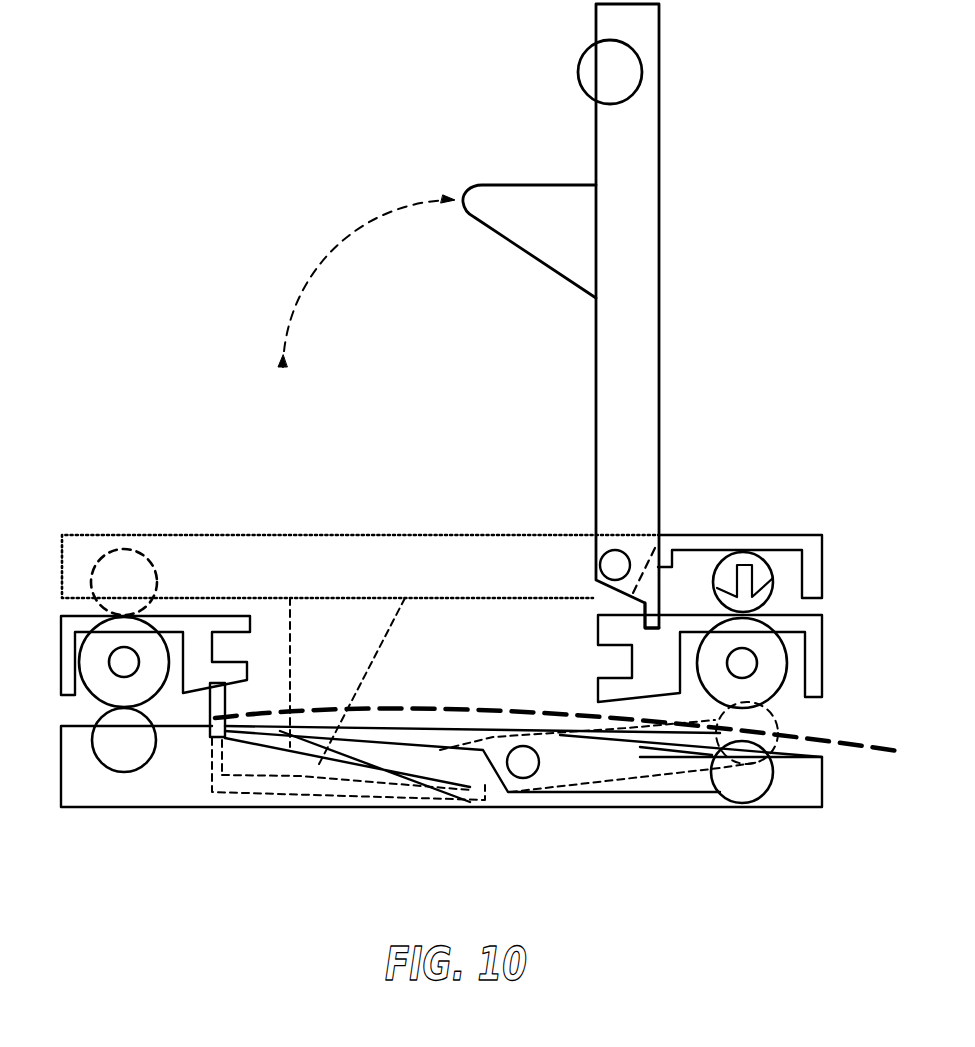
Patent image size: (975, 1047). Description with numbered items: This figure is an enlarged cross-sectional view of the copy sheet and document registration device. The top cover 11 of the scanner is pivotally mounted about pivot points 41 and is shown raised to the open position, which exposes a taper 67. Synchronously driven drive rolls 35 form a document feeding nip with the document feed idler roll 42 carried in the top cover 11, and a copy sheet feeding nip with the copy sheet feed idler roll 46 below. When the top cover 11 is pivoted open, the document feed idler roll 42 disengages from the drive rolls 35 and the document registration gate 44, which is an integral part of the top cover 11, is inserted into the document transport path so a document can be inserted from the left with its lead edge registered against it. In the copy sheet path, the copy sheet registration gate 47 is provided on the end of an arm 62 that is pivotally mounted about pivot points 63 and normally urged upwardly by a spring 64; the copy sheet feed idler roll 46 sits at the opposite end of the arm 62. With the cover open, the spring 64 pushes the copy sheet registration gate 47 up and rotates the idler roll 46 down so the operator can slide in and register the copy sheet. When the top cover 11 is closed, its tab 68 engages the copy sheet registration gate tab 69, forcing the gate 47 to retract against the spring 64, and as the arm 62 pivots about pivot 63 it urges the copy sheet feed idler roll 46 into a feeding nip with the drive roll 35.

The top cover 11 is at (660, 270).
The tab 68 is at (480, 195).
The document feed idler roll 42 is at (126, 548).
The pivot points 41 is at (600, 563).
The document registration gate 44 is at (660, 602).
The taper 67 is at (600, 600).
The drive rolls 35 is at (95, 660).
The copy sheet registration gate 47 is at (225, 700).
The copy sheet feed idler roll 46 is at (124, 772).
The copy sheet registration gate tab 69 is at (305, 765).
The spring 64 is at (400, 776).
The pivot points 63 is at (524, 765).
The arm 62 is at (648, 782).